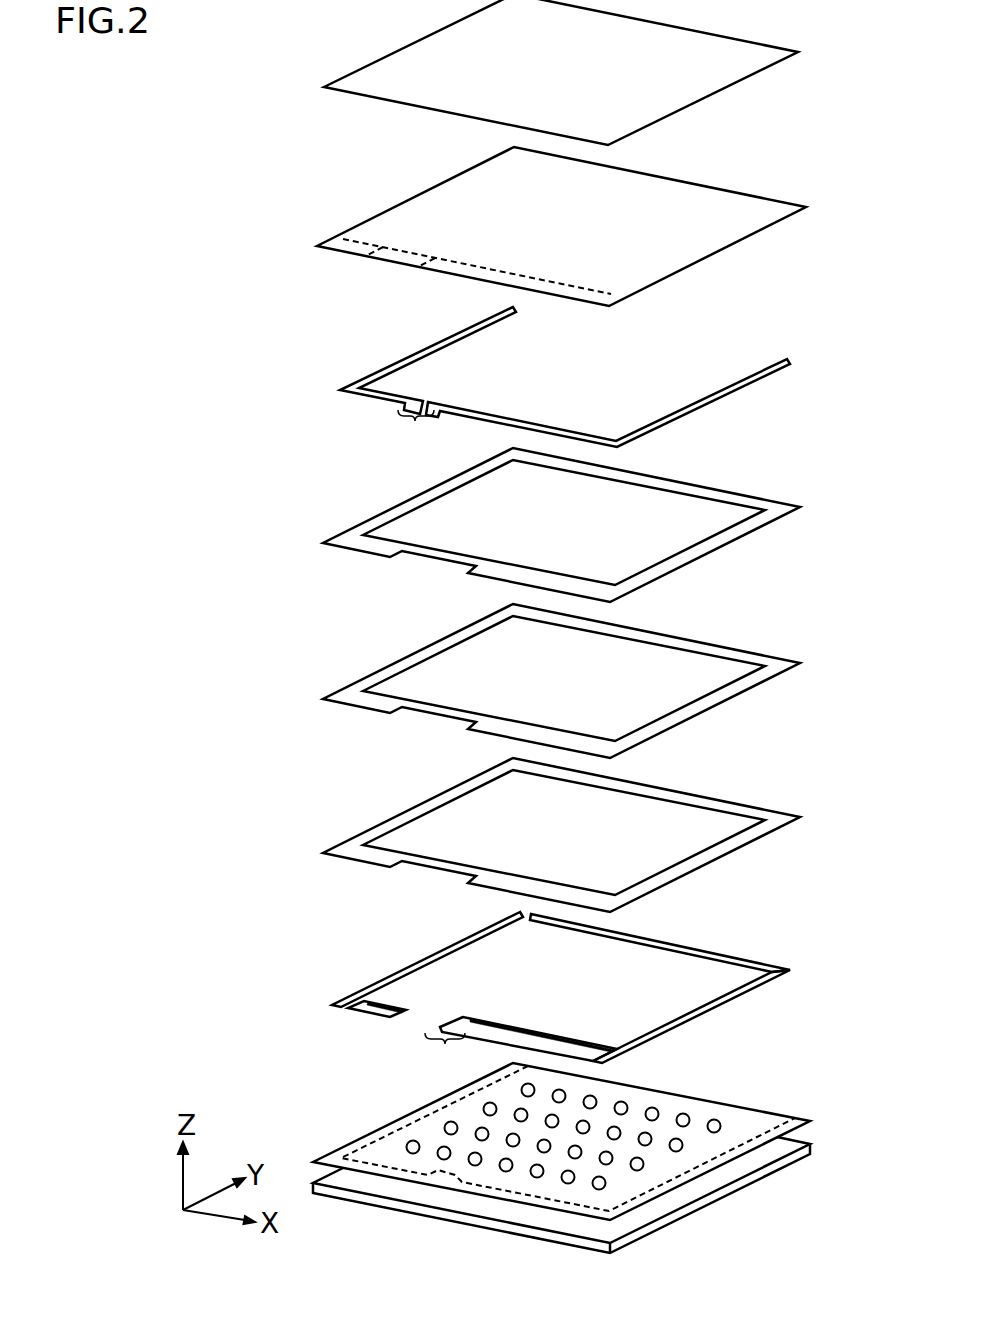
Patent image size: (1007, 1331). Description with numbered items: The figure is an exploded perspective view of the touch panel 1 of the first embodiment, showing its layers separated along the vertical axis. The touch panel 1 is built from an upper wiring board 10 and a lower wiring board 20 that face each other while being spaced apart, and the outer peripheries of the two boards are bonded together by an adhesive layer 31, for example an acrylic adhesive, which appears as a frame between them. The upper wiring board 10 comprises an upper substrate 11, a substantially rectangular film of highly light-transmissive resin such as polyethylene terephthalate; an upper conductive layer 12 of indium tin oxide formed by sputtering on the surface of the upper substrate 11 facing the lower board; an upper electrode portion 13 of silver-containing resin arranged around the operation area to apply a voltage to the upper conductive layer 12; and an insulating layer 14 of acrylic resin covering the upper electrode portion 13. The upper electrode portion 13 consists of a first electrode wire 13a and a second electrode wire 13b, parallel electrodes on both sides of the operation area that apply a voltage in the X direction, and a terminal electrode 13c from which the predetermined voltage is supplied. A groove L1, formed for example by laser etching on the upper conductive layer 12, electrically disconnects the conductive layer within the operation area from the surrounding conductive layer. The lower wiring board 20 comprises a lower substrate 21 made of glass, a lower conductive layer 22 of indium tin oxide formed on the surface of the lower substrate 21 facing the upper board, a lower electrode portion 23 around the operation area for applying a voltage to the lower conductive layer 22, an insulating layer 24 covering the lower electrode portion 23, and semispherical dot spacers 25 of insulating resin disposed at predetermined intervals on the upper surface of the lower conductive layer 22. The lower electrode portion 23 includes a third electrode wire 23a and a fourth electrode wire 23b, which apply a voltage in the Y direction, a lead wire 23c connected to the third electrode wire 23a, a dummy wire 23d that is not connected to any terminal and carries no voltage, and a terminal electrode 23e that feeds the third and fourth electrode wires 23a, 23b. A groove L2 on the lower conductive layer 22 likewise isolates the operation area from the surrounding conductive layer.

The touch panel 1 is at (248, 62).
The upper wiring board 10 is at (862, 8).
The upper substrate 11 is at (762, 53).
The upper conductive layer 12 is at (762, 208).
The groove L1 is at (363, 253).
The upper electrode portion 13 is at (777, 323).
The first electrode wire 13a is at (733, 387).
The second electrode wire 13b is at (440, 343).
The terminal electrode 13c is at (408, 437).
The insulating layer 14 is at (775, 512).
The adhesive layer 31 is at (773, 662).
The lower wiring board 20 is at (862, 773).
The insulating layer 24 is at (773, 820).
The lower electrode portion 23 is at (777, 937).
The third electrode wire 23a is at (680, 948).
The fourth electrode wire 23b is at (487, 1017).
The lead wire 23c is at (718, 1007).
The dummy wire 23d is at (433, 958).
The terminal electrode 23e is at (438, 1056).
The dot spacers 25 is at (718, 1123).
The lower conductive layer 22 is at (753, 1122).
The lower substrate 21 is at (812, 1152).
The groove L2 is at (398, 1127).